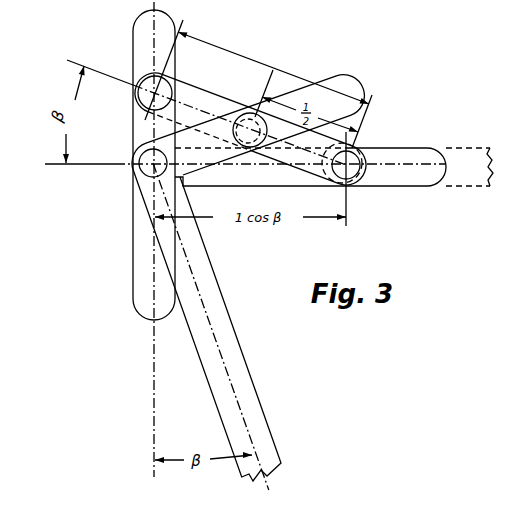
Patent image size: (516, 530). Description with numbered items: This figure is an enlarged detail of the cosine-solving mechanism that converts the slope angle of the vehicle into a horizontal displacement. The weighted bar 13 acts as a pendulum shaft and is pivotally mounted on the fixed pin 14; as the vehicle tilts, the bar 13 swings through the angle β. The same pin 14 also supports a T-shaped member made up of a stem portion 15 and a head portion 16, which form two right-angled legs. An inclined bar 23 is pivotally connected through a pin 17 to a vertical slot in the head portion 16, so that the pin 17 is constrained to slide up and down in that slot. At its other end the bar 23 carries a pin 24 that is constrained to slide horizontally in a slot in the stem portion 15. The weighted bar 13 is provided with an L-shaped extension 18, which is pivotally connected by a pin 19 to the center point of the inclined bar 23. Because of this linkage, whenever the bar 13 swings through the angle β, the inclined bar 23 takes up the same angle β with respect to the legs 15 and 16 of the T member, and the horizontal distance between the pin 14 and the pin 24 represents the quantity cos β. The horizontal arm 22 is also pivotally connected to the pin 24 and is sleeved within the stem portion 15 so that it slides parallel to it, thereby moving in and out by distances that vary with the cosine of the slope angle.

The weighted bar 13 is at (252, 379).
The fixed pin 14 is at (136, 173).
The stem portion 15 is at (363, 148).
The head portion 16 is at (137, 45).
The pin 17 is at (137, 106).
The L-shaped extension 18 is at (220, 122).
The pin 19 is at (262, 118).
The horizontal arm 22 is at (463, 179).
The inclined bar 23 is at (197, 88).
The pin 24 is at (360, 152).